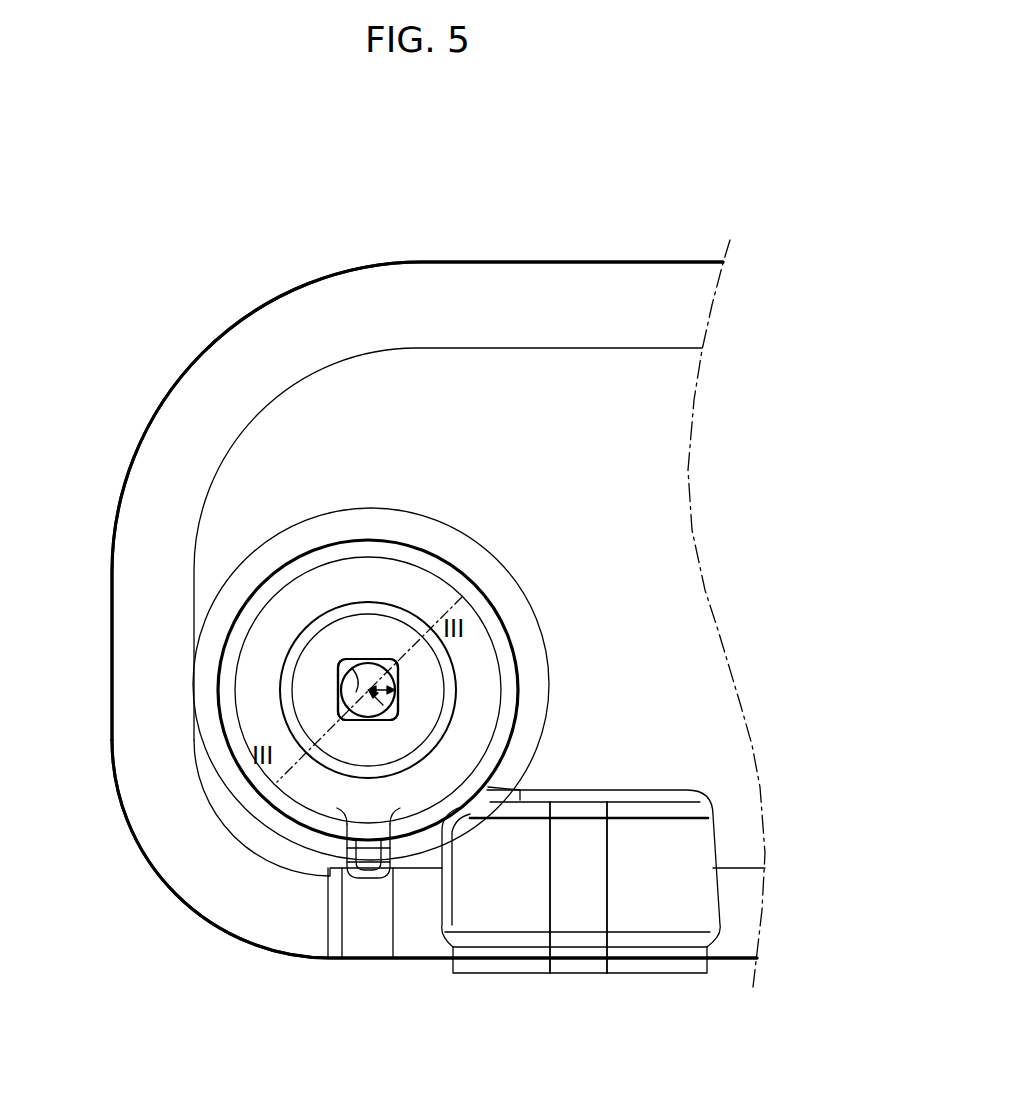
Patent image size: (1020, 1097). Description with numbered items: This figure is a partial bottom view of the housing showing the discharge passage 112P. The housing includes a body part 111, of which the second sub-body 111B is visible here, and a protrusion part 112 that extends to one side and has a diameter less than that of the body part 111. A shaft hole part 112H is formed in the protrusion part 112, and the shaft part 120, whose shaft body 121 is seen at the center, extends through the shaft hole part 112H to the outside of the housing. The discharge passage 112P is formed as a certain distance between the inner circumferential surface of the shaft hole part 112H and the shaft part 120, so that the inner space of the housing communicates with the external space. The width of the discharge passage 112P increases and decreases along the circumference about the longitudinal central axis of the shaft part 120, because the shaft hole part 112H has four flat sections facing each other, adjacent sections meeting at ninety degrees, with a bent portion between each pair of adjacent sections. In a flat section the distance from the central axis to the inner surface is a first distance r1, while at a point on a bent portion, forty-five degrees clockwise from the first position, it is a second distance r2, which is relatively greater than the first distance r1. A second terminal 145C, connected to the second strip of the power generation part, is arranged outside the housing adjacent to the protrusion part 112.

The body part 111 is at (680, 726).
The second sub-body 111B is at (688, 724).
The protrusion part 112 is at (432, 678).
The shaft hole part 112H is at (392, 660).
The discharge passage 112P is at (293, 720).
The shaft part 120 is at (348, 660).
The shaft body 121 is at (348, 660).
The second terminal 145C is at (508, 917).
The first distance r1 is at (398, 692).
The second distance r2 is at (383, 706).